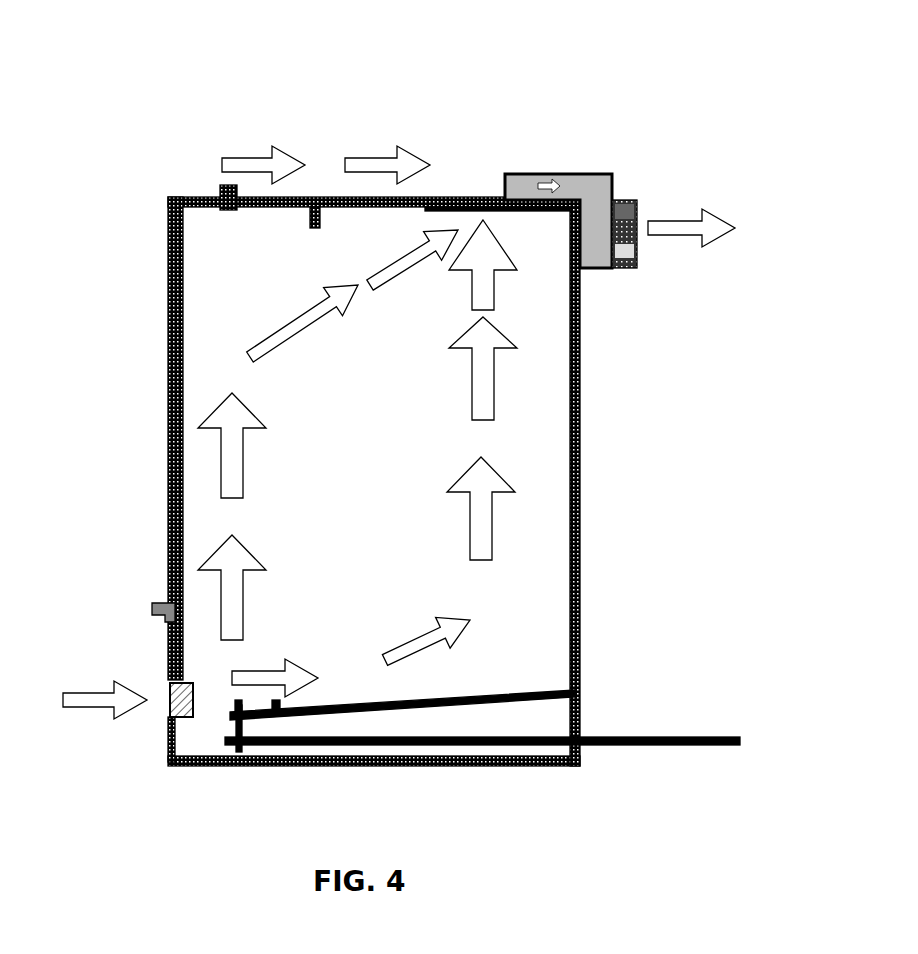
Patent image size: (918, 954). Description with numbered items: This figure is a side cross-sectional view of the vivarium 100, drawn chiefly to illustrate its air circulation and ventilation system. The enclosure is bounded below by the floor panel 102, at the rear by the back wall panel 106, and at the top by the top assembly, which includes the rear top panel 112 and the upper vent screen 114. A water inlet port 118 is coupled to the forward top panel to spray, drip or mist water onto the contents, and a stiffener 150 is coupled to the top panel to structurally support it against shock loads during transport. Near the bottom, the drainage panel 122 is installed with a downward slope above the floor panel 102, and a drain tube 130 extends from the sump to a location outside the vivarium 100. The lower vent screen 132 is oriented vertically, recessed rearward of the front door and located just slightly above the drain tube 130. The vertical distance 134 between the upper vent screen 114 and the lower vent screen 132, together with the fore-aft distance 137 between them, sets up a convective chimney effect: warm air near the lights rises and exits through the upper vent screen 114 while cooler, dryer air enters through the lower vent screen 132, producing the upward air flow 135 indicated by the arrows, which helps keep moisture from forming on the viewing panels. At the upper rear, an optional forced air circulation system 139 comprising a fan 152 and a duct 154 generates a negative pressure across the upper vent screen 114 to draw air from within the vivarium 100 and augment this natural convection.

The vivarium 100 is at (408, 441).
The floor panel 102 is at (496, 767).
The back wall panel 106 is at (583, 380).
The rear top panel 112 is at (507, 212).
The upper vent screen 114 is at (548, 208).
The water inlet port 118 is at (222, 186).
The drainage panel 122 is at (510, 695).
The drain tube 130 is at (640, 738).
The lower vent screen 132 is at (196, 700).
The distance 134 is at (160, 217).
The air flow 135 is at (496, 530).
The fore-aft distance 137 is at (447, 788).
The forced air circulation system 139 is at (650, 138).
The stiffener 150 is at (315, 207).
The fan 152 is at (630, 200).
The duct 154 is at (580, 173).